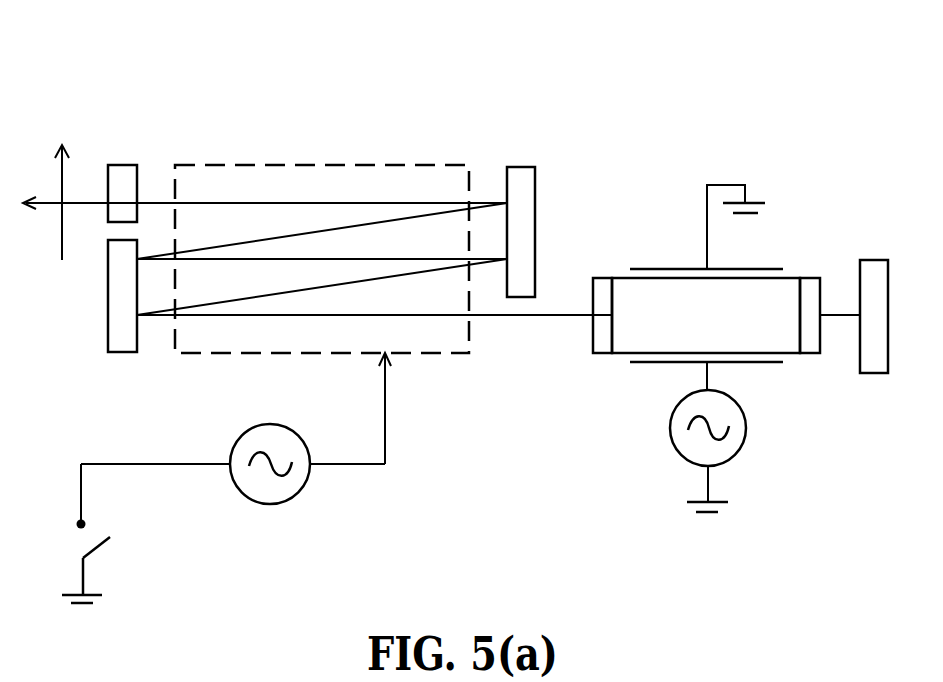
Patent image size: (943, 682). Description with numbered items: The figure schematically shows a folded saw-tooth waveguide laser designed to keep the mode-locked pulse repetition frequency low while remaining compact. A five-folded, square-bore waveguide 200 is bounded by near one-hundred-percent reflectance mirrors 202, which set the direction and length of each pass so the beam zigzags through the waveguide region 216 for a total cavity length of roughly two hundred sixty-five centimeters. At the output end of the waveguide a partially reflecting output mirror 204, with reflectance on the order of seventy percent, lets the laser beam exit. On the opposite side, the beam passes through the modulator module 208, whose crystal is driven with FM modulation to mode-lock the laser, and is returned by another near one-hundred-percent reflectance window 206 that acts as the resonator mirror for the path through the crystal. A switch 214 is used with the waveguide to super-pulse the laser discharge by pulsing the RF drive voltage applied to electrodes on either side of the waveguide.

The waveguide 200 is at (238, 108).
The reflectance mirrors 202 is at (516, 167).
The partially reflecting output mirror 204 is at (117, 165).
The reflectance window 206 is at (877, 260).
The modulator module 208 is at (622, 353).
The switch 214 is at (133, 547).
The optical delay region 216 is at (278, 165).